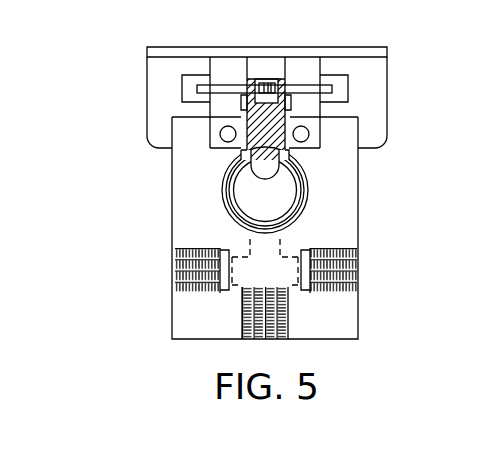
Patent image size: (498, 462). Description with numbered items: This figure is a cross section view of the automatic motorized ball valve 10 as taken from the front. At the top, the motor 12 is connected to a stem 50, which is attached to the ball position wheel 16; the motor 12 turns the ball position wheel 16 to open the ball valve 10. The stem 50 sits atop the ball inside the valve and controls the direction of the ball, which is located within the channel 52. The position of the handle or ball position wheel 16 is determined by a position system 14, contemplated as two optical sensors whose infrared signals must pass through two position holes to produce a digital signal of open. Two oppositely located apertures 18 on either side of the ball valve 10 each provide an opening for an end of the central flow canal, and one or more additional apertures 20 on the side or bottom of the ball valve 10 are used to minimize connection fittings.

The automatic motorized ball valve 10 is at (126, 82).
The motor 12 is at (266, 62).
The position system 14 is at (221, 137).
The ball position wheel 16 is at (332, 89).
The aperture 18 is at (263, 192).
The aperture 20 is at (342, 276).
The stem 50 is at (287, 150).
The channel 52 is at (237, 211).